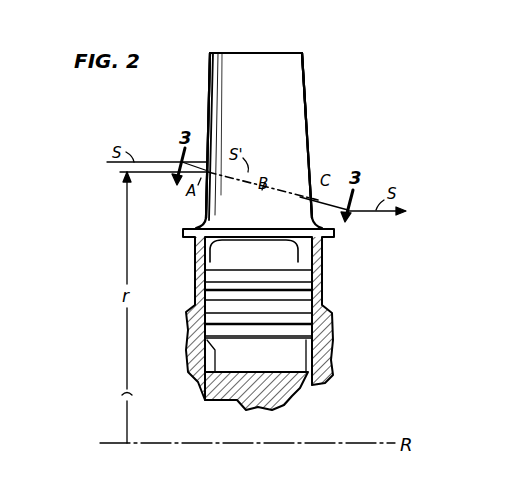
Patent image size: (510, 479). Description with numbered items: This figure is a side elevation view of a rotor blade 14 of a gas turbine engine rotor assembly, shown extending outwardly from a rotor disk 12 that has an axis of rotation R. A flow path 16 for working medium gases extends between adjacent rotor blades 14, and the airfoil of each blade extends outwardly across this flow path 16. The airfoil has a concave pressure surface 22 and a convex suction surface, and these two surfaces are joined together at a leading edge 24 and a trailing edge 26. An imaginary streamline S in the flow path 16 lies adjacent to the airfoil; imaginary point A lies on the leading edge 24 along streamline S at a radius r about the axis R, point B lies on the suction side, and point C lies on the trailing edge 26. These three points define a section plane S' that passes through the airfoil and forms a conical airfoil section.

The rotor disk 12 is at (265, 398).
The rotor blade 14 is at (304, 101).
The flow path 16 is at (203, 114).
The pressure surface 22 is at (272, 114).
The leading edge 24 is at (210, 70).
The trailing edge 26 is at (302, 65).